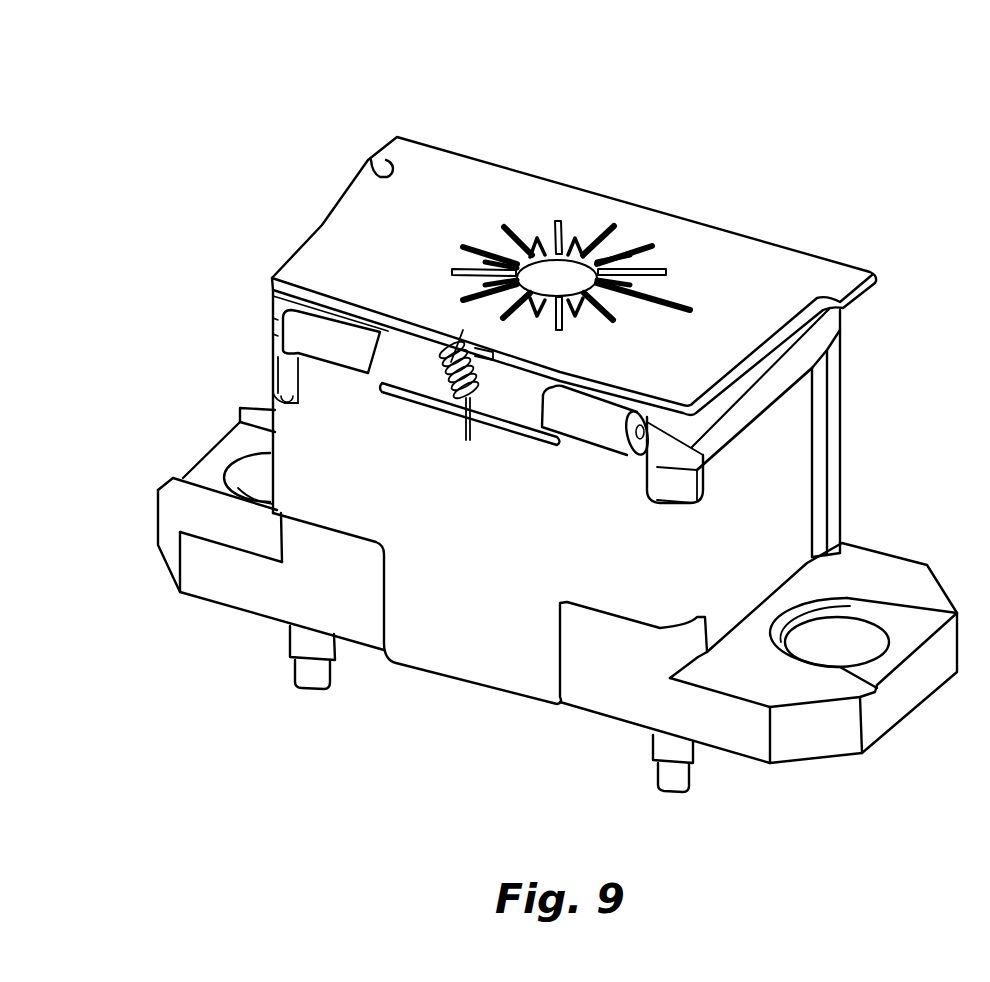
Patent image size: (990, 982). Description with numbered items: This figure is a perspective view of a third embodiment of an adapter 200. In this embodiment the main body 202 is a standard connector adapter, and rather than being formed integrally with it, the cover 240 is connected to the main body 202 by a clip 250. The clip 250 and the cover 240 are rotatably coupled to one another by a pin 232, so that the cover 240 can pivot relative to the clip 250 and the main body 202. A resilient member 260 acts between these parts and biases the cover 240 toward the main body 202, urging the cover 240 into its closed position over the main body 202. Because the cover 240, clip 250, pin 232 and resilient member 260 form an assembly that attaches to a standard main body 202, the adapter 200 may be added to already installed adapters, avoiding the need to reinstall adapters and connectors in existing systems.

The adapter 200 is at (840, 151).
The cover 240 is at (656, 222).
The clip 250 is at (287, 445).
The main body 202 is at (157, 503).
The pin 232 is at (650, 428).
The resilient member 260 is at (470, 410).